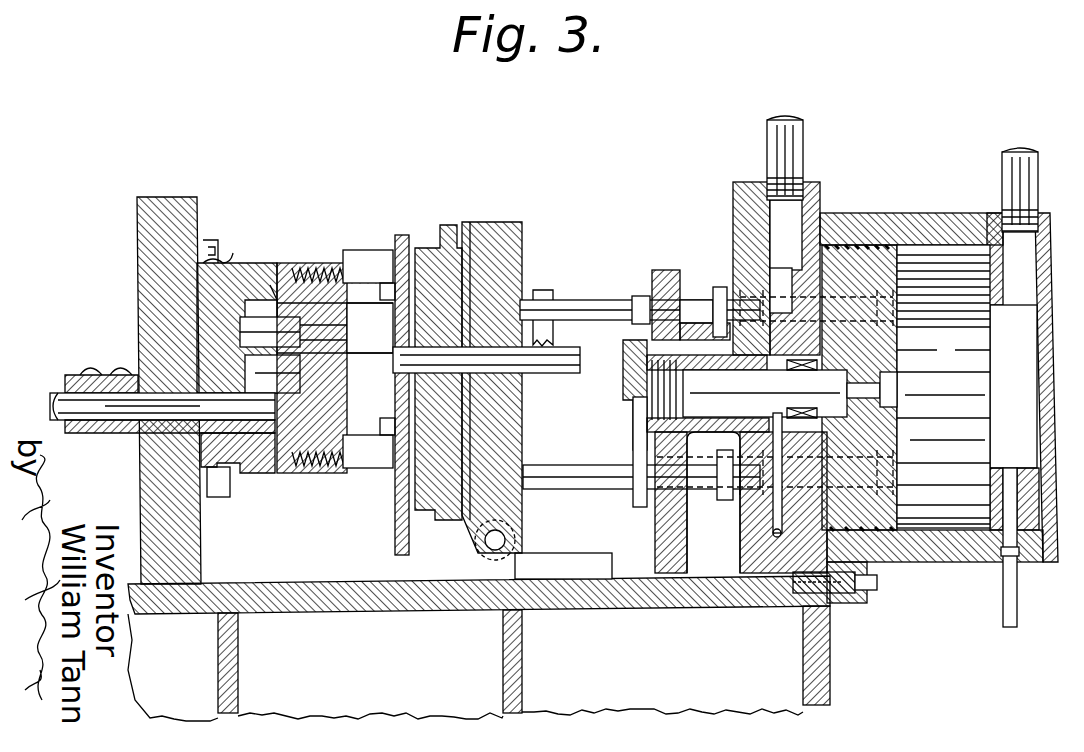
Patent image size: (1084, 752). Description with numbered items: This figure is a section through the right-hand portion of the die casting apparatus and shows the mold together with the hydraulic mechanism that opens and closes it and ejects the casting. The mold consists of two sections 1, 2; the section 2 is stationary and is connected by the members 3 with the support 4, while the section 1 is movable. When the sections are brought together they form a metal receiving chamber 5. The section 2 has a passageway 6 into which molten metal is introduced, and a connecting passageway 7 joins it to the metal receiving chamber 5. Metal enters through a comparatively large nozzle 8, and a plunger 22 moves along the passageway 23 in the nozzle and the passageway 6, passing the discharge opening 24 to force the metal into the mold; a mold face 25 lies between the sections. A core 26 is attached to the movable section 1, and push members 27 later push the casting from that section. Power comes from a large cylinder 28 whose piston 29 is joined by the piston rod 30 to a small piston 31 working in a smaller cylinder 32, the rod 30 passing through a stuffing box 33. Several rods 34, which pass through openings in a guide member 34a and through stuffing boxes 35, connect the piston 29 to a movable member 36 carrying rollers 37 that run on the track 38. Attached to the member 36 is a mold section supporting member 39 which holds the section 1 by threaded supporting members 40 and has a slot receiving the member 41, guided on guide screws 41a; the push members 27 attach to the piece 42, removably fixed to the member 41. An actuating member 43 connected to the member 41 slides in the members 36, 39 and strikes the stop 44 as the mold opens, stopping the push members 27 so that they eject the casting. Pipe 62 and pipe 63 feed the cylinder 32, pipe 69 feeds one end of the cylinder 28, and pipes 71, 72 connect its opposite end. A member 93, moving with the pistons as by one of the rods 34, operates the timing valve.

The mold section 1 is at (305, 265).
The mold section 2 is at (262, 290).
The members 3 is at (218, 258).
The support 4 is at (168, 205).
The metal receiving chamber 5 is at (253, 305).
The passageway 6 is at (248, 475).
The connecting passageway 7 is at (262, 380).
The nozzle 8 is at (135, 433).
The plunger 22 is at (52, 395).
The passageway 23 is at (125, 408).
The discharge opening 24 is at (108, 380).
The bearing face 25 is at (278, 288).
The core 26 is at (250, 330).
The push members 27 is at (362, 352).
The large cylinder 28 is at (872, 235).
The piston 29 is at (905, 255).
The piston rod 30 is at (717, 327).
The small piston 31 is at (623, 385).
The smaller cylinder 32 is at (700, 318).
The stuffing box 33 is at (823, 420).
The rods 34 is at (585, 300).
The guide member 34a is at (658, 270).
The stuffing boxes 35 is at (720, 287).
The movable member 36 is at (505, 232).
The rollers 37 is at (500, 548).
The track 38 is at (585, 562).
The mold section supporting member 39 is at (432, 250).
The threaded supporting members 40 is at (350, 265).
The member 41 is at (403, 240).
The guide screws 41a is at (370, 250).
The piece 42 is at (388, 283).
The actuating member 43 is at (555, 375).
The stop 44 is at (640, 298).
The pipe 62 is at (640, 500).
The pipe 63 is at (772, 505).
The pipe 69 is at (805, 140).
The pipe 71 is at (1040, 170).
The pipe 72 is at (1003, 608).
The member 93 is at (541, 290).